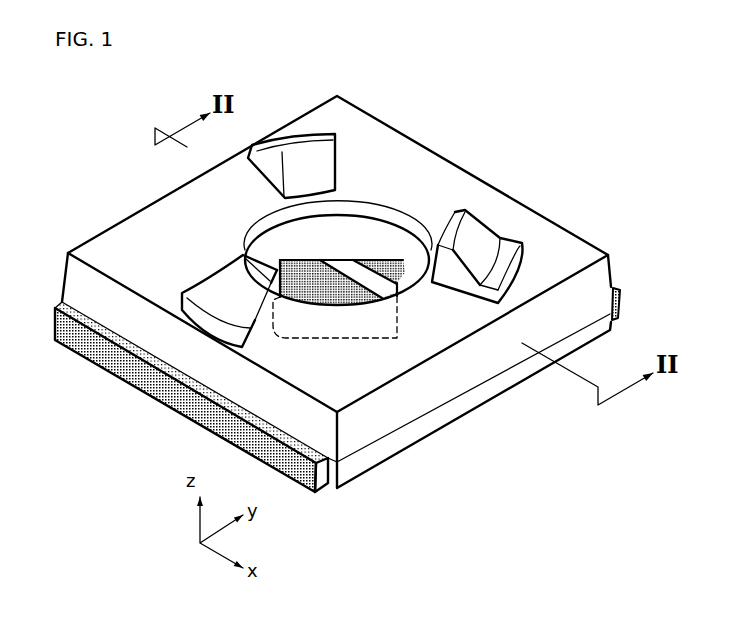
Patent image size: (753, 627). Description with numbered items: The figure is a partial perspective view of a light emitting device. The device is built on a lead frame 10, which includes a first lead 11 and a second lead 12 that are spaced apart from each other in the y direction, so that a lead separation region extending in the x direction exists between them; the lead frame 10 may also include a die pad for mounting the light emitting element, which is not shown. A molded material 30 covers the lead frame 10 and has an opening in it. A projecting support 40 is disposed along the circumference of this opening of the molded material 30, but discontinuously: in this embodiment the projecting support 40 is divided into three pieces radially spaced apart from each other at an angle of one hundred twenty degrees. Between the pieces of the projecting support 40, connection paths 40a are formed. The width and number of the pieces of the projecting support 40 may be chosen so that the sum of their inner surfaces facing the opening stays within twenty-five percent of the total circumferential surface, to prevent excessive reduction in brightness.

The lead frame 10 is at (368, 370).
The first lead 11 is at (153, 390).
The second lead 12 is at (618, 293).
The molded material 30 is at (448, 412).
The projecting support 40 is at (287, 147).
The connection path 40a is at (430, 162).